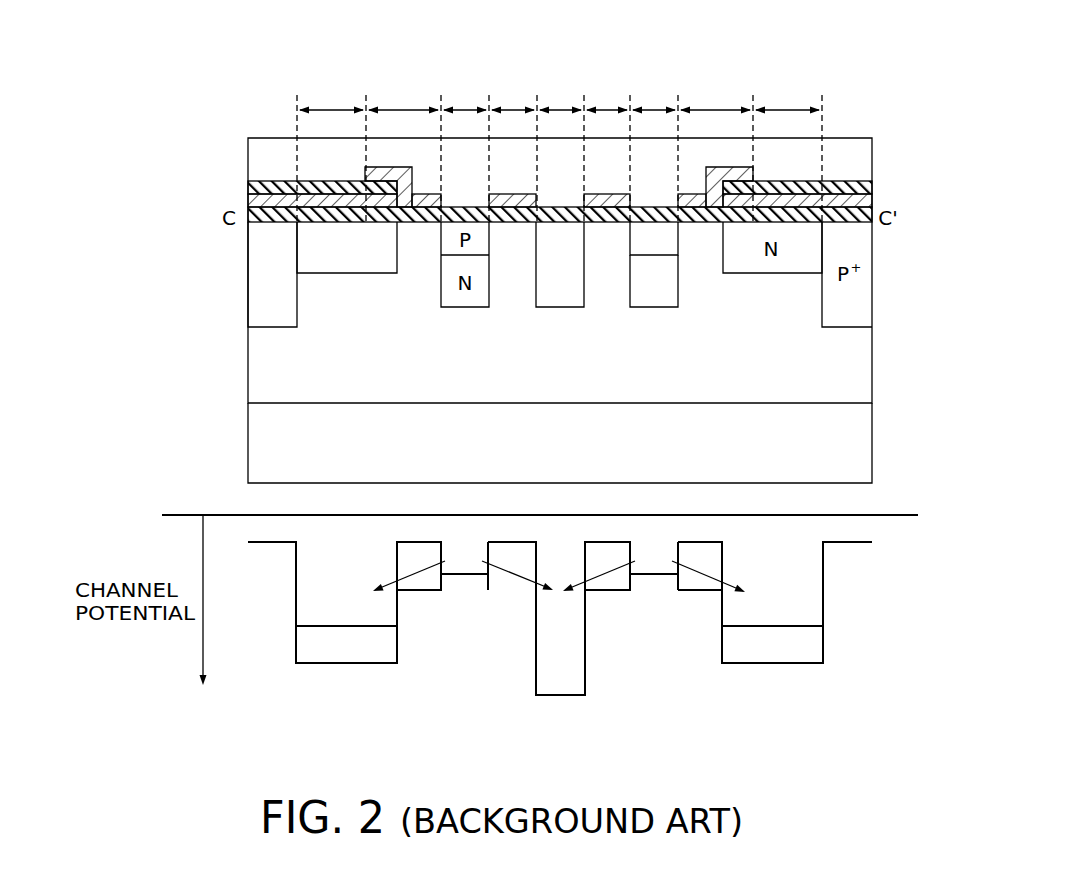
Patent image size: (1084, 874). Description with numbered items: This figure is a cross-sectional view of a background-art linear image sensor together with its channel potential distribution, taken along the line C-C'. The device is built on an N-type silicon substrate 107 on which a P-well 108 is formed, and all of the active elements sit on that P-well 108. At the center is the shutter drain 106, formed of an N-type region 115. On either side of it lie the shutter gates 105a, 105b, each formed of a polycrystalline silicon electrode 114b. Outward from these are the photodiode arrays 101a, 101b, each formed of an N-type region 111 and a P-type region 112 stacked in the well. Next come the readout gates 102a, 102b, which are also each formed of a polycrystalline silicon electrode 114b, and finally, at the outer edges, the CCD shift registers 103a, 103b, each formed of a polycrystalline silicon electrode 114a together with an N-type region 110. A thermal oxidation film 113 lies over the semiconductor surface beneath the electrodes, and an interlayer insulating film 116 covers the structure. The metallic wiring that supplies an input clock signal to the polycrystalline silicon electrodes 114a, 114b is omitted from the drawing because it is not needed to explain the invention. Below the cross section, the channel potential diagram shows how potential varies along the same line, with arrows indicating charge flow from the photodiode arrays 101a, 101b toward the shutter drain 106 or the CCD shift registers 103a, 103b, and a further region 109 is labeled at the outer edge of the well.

The photodiode array 101a is at (653, 110).
The photodiode array 101b is at (465, 110).
The readout gate 102a is at (717, 110).
The readout gate 102b is at (403, 110).
The CCD shift register 103a is at (787, 110).
The CCD shift register 103b is at (331, 110).
The shutter gate 105a is at (607, 110).
The shutter gate 105b is at (510, 110).
The shutter drain 106 is at (558, 110).
The N-type silicon substrate 107 is at (262, 437).
The P-well 108 is at (262, 357).
The P+ region 109 is at (262, 312).
The N-type region 110 is at (303, 250).
The N-type region 111 is at (668, 302).
The P-type region 112 is at (673, 243).
The thermal oxidation film 113 is at (827, 182).
The polycrystalline silicon electrode 114a is at (248, 198).
The polycrystalline silicon electrode 114b is at (367, 175).
The N-type region 115 is at (572, 297).
The interlayer insulating film 116 is at (847, 138).